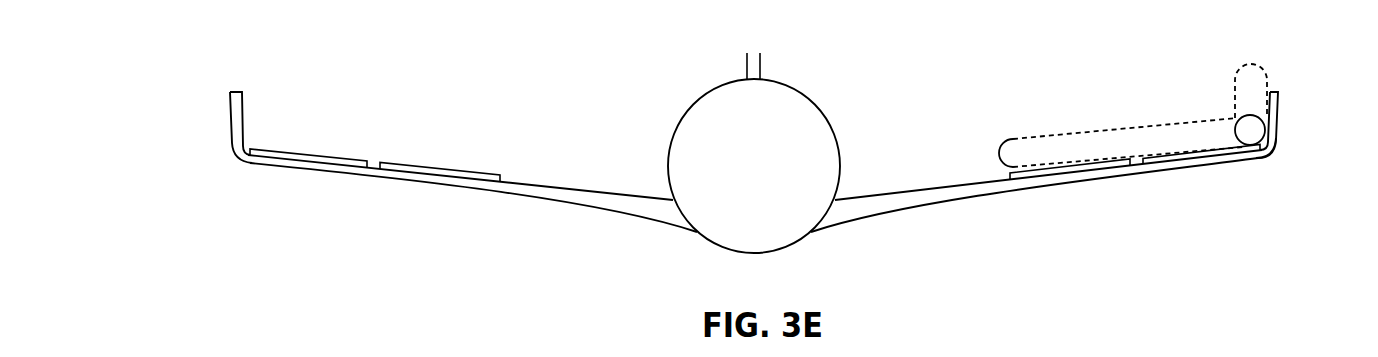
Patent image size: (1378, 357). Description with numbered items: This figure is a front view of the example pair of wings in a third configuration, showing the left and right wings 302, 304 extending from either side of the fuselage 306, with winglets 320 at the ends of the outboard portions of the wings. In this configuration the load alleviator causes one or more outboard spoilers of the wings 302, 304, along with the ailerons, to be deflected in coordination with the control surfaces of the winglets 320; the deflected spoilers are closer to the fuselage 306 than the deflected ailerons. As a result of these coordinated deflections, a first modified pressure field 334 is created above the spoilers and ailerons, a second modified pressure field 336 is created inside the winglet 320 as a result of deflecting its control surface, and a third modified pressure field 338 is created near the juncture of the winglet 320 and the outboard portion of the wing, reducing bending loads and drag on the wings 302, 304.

The left wing 302 is at (588, 192).
The right wing 304 is at (905, 192).
The fuselage 306 is at (773, 172).
The winglets 320 is at (1280, 155).
The first modified pressure field 334 is at (1153, 138).
The second modified pressure field 336 is at (1250, 78).
The third modified pressure field 338 is at (1252, 130).